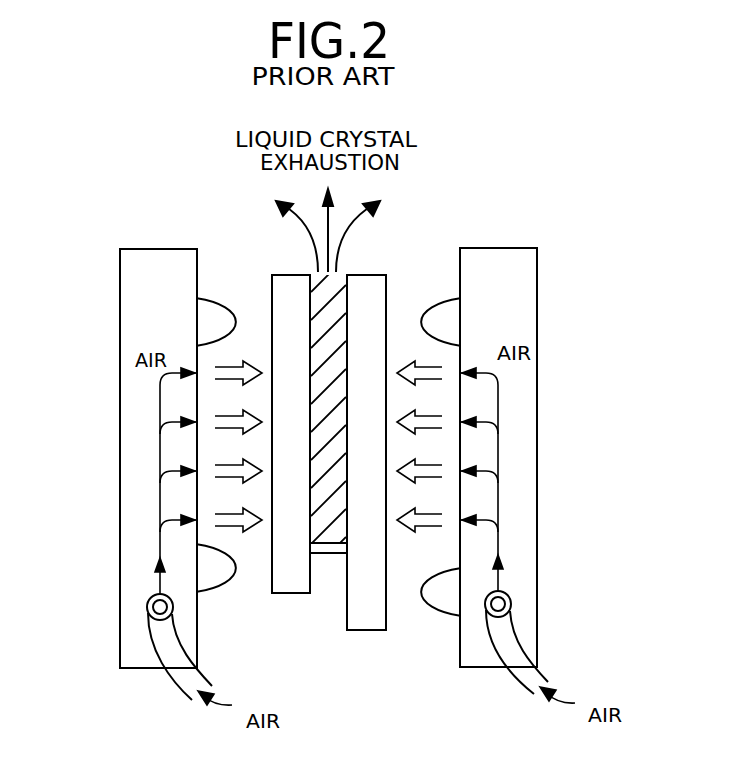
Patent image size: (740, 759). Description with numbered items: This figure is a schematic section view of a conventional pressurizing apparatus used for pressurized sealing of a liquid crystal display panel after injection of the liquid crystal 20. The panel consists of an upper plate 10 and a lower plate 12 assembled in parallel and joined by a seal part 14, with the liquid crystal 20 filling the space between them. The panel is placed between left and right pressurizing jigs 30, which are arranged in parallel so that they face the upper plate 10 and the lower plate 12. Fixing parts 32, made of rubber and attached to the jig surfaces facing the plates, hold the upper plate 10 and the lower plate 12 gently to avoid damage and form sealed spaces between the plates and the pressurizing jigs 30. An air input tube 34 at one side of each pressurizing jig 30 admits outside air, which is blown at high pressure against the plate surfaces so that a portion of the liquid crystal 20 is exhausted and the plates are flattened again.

The upper plate 10 is at (285, 281).
The lower plate 12 is at (370, 281).
The seal part 14 is at (330, 553).
The liquid crystal 20 is at (317, 345).
The pressurizing jigs 30 is at (120, 296).
The fixing parts 32 is at (220, 300).
The air input tube 34 is at (170, 652).